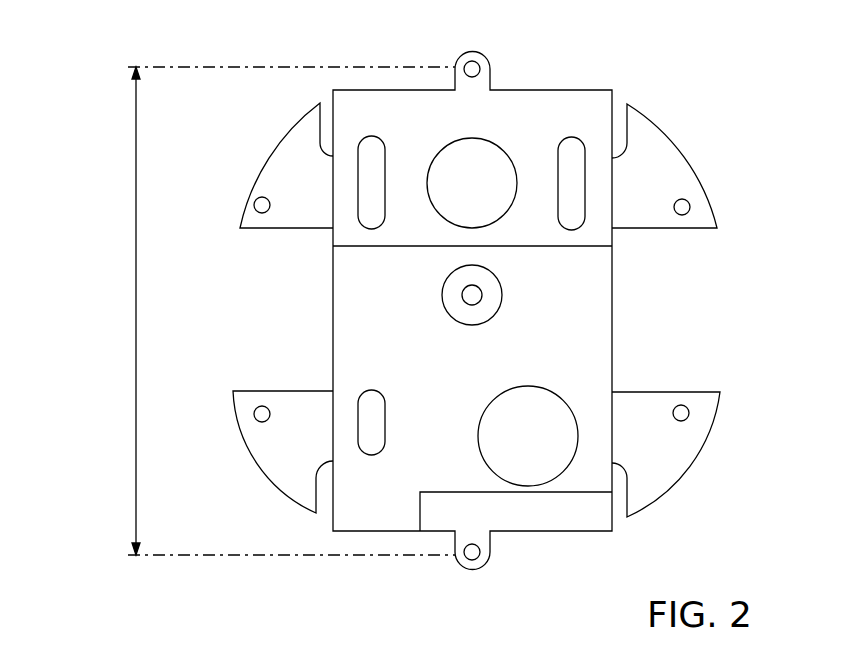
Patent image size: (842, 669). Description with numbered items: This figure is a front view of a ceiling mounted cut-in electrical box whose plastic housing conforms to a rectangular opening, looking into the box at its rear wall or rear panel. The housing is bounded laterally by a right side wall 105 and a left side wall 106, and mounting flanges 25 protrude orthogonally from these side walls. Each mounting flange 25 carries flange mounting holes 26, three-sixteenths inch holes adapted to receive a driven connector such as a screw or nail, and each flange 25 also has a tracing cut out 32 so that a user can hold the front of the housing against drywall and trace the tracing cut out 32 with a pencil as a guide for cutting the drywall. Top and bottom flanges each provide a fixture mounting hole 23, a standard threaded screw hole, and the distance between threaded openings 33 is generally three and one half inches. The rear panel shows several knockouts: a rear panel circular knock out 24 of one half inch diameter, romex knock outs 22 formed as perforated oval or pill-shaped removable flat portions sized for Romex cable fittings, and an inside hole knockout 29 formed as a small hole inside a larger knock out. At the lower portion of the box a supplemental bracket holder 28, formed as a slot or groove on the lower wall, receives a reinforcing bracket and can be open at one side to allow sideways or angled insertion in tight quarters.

The romex knock out 22 is at (571, 139).
The fixture mounting hole 23 is at (477, 58).
The rear panel circular knock out 24 is at (486, 157).
The mounting flange 25 is at (291, 138).
The flange mounting holes 26 is at (257, 197).
The supplemental bracket holder 28 is at (598, 513).
The inside hole knockout 29 is at (483, 296).
The tracing cut out 32 is at (330, 101).
The distance between threaded openings 33 is at (133, 127).
The right side wall 105 is at (612, 316).
The left side wall 106 is at (333, 318).